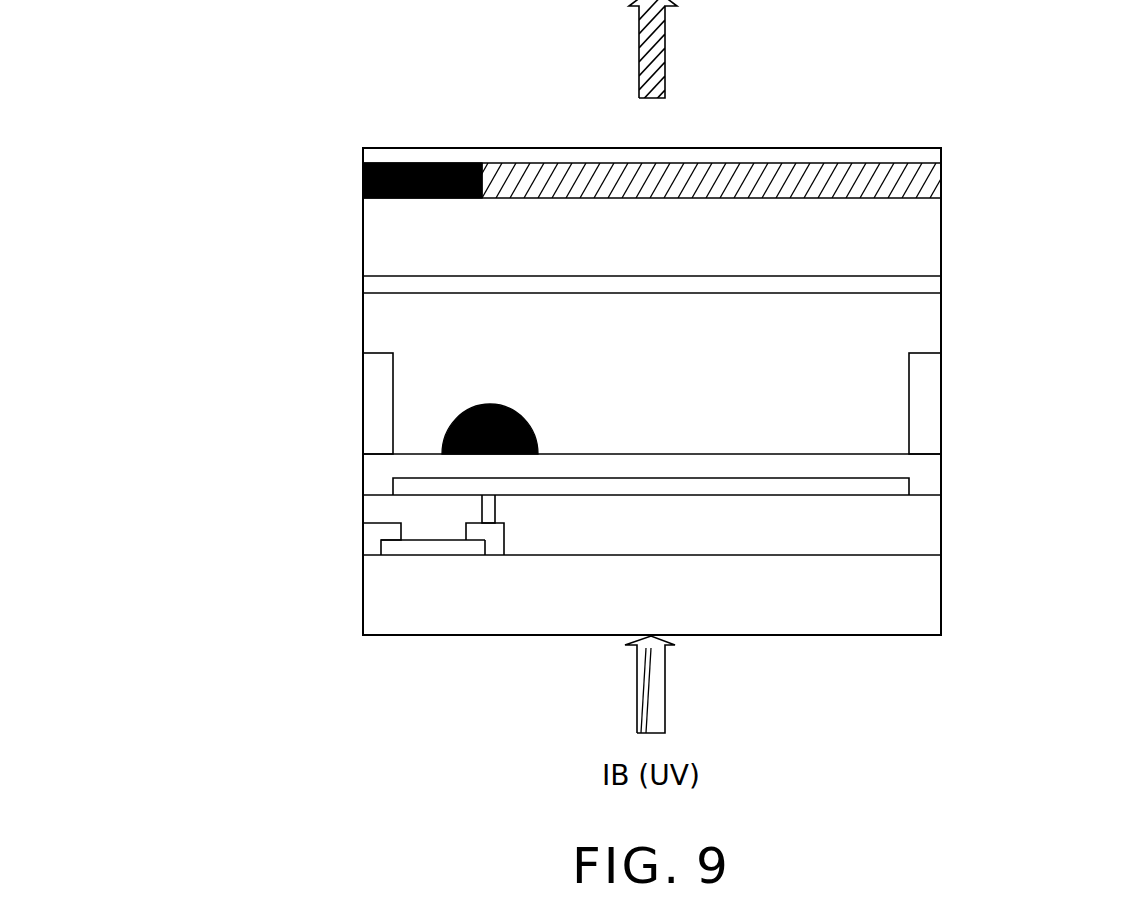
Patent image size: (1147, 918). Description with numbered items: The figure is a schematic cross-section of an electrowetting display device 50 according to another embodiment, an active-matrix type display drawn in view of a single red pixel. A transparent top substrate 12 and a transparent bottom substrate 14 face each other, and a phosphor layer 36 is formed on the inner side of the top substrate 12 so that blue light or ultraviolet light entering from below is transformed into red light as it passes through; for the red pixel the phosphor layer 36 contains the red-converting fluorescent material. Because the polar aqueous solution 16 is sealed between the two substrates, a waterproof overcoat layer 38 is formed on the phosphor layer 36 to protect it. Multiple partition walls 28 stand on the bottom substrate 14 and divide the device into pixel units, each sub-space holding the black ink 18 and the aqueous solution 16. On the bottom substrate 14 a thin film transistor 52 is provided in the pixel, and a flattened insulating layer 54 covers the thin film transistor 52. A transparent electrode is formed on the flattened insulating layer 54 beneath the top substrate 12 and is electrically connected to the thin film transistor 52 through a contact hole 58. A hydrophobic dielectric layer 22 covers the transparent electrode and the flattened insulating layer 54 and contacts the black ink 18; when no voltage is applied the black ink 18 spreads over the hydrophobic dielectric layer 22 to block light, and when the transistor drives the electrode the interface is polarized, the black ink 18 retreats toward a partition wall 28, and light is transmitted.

The electrowetting display device 50 is at (179, 78).
The top substrate 12 is at (922, 248).
The bottom substrate 14 is at (920, 610).
The aqueous solution 16 is at (385, 325).
The black ink 18 is at (507, 401).
The hydrophobic dielectric layer 22 is at (380, 472).
The partition walls 28 is at (378, 425).
The phosphor layer 36 is at (840, 163).
The overcoat layer 38 is at (778, 160).
The thin film transistor 52 is at (429, 547).
The flattened insulating layer 54 is at (895, 535).
The contact hole 58 is at (494, 513).